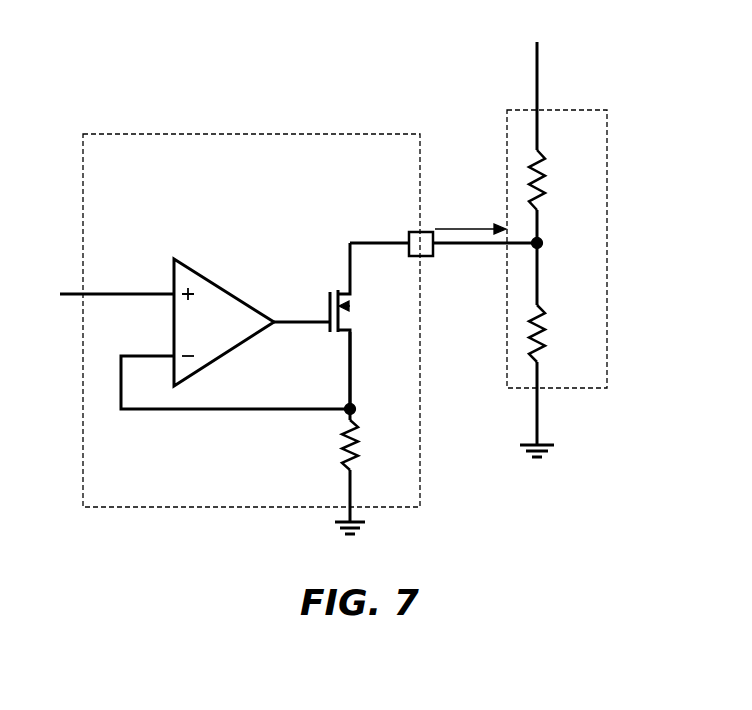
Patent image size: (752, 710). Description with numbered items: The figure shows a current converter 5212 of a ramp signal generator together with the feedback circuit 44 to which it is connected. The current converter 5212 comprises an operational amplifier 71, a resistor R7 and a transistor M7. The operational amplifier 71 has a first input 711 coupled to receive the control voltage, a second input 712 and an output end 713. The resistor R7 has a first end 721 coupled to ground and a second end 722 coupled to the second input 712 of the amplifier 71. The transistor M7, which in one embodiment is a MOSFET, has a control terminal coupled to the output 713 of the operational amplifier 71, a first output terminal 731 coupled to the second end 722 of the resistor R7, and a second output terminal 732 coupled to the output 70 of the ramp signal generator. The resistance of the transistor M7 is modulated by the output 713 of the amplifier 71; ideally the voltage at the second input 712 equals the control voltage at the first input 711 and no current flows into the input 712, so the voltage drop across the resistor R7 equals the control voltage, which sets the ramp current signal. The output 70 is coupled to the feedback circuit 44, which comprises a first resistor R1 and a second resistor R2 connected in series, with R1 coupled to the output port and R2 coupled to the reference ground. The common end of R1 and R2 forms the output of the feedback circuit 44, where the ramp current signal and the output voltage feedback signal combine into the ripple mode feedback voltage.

The current converter 5212 is at (243, 132).
The operational amplifier 71 is at (224, 288).
The first input 711 is at (142, 293).
The second input 712 is at (152, 355).
The output end 713 is at (280, 321).
The transistor M7 is at (364, 326).
The first output terminal 731 is at (352, 348).
The second output terminal 732 is at (350, 268).
The second end 722 is at (353, 418).
The first end 721 is at (352, 480).
The resistor R7 is at (332, 447).
The output 70 is at (420, 258).
The feedback circuit 44 is at (571, 236).
The first resistor R1 is at (559, 180).
The second resistor R2 is at (557, 333).